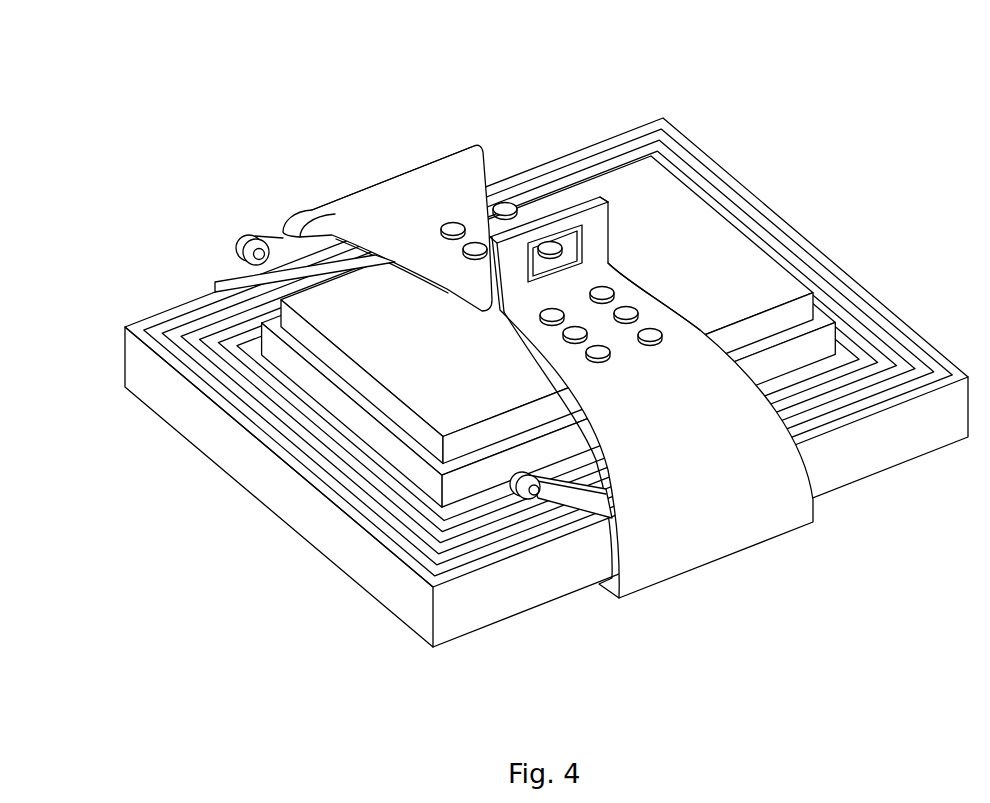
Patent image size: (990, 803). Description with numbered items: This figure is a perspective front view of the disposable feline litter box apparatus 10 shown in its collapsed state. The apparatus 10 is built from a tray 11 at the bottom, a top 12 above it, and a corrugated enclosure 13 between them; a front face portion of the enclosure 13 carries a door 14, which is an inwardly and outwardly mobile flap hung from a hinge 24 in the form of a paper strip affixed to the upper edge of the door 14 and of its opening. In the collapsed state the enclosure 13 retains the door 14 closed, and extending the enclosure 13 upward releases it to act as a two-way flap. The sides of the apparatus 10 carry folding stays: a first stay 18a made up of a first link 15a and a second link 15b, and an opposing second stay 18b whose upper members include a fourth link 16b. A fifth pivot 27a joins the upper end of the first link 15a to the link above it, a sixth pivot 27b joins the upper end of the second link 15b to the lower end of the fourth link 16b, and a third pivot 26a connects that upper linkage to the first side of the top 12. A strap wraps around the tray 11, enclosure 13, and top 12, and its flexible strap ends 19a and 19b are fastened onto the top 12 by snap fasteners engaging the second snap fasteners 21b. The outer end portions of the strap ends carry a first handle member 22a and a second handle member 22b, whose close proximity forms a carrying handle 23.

The apparatus 10 is at (98, 102).
The tray 11 is at (182, 395).
The top 12 is at (300, 312).
The enclosure 13 is at (170, 314).
The door 14 is at (298, 427).
The first link 15a is at (240, 240).
The second link 15b is at (585, 506).
The fourth link 16b is at (568, 472).
The first stay 18a is at (345, 100).
The second stay 18b is at (752, 606).
The first strap end 19a is at (445, 190).
The second strap end 19b is at (790, 520).
The second snap fasteners 21b is at (477, 246).
The first handle member 22a is at (557, 207).
The second handle member 22b is at (610, 226).
The carrying handle 23 is at (573, 210).
The hinge 24 is at (345, 430).
The third pivot 26a is at (318, 243).
The fifth pivot 27a is at (259, 248).
The sixth pivot 27b is at (533, 496).